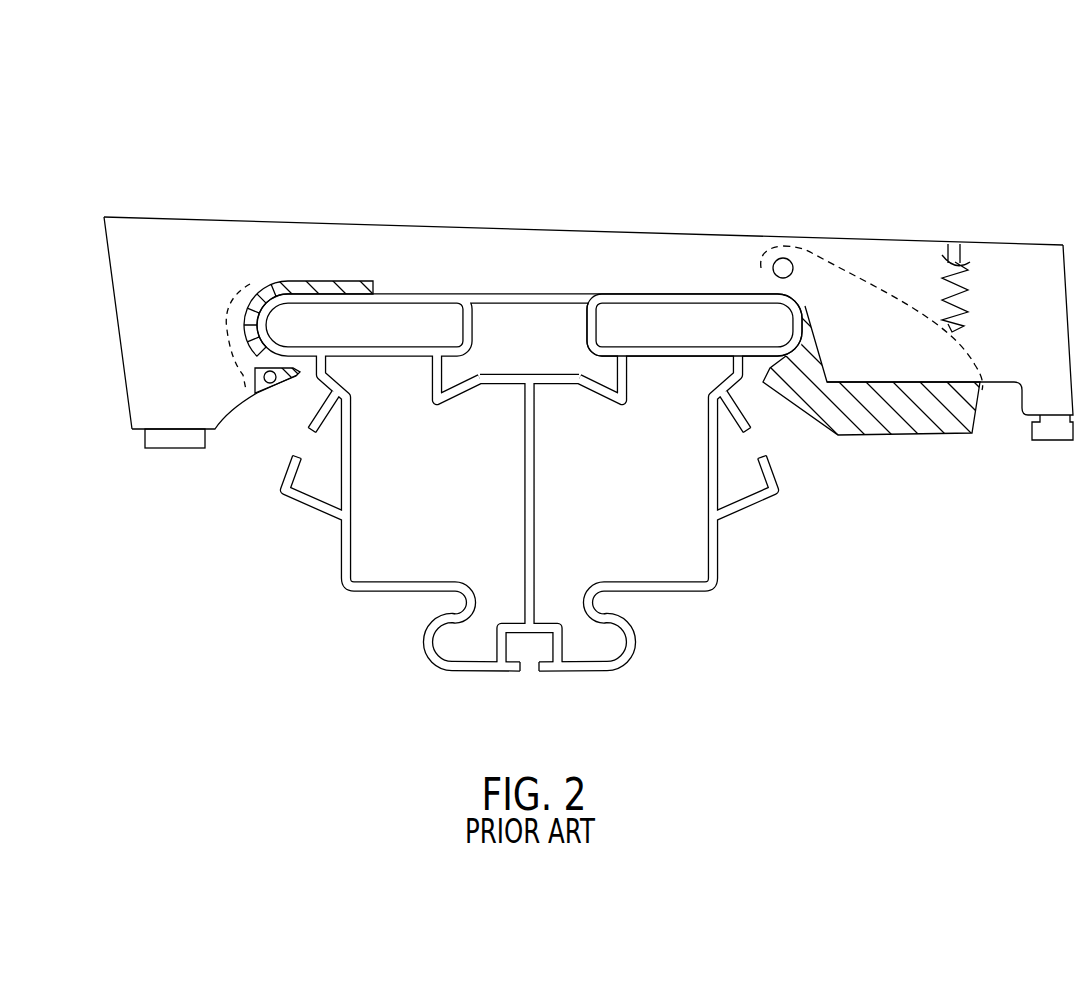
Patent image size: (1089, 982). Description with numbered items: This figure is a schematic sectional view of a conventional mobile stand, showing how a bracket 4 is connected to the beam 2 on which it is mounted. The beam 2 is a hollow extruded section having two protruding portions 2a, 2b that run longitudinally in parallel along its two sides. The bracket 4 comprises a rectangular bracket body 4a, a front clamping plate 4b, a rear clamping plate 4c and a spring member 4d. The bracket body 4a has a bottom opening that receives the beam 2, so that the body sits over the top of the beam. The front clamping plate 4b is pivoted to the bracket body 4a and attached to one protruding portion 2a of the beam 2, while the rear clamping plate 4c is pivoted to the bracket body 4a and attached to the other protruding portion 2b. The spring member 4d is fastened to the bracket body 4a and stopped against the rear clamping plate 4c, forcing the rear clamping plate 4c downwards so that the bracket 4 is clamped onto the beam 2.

The beam 2 is at (693, 605).
The protruding portion 2a is at (257, 395).
The protruding portion 2b is at (793, 346).
The bracket 4 is at (851, 236).
The bracket body 4a is at (541, 232).
The front clamping plate 4b is at (280, 282).
The rear clamping plate 4c is at (915, 415).
The spring member 4d is at (972, 284).